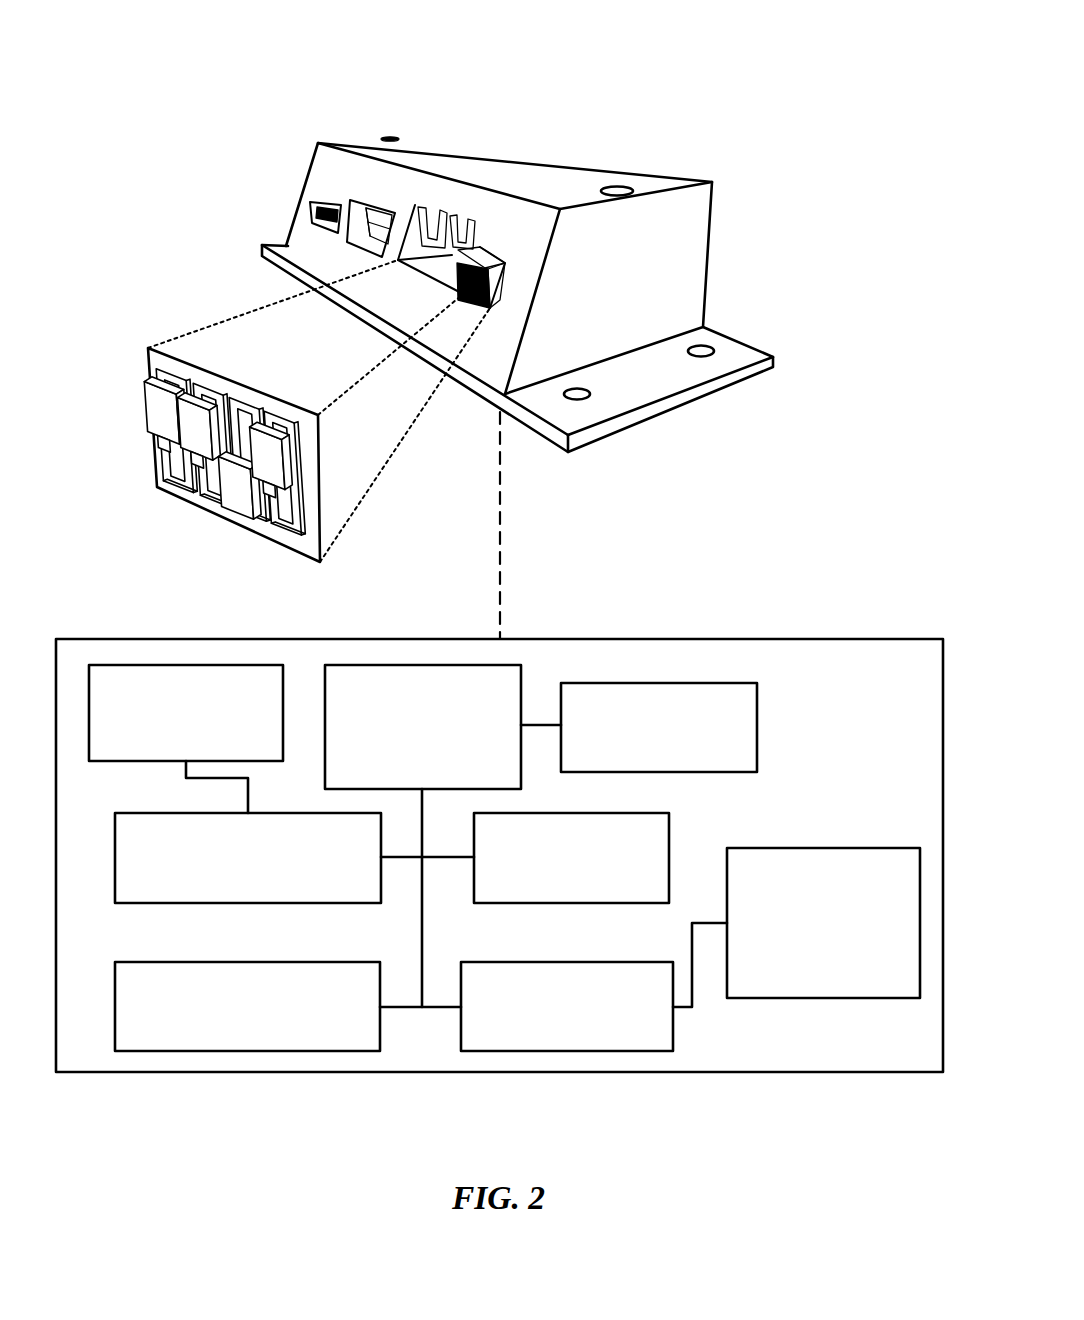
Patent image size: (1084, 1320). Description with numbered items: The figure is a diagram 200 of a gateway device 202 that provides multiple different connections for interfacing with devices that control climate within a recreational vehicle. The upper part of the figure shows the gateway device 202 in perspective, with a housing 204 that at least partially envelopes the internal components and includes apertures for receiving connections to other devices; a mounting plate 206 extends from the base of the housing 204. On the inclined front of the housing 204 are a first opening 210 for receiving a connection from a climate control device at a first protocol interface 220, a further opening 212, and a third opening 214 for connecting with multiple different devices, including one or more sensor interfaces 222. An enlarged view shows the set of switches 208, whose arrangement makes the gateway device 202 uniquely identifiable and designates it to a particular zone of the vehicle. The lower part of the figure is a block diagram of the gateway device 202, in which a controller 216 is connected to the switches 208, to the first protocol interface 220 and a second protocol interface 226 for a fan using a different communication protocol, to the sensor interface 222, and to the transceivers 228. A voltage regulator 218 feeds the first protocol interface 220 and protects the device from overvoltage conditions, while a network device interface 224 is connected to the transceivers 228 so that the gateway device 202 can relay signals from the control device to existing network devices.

The diagram 200 is at (205, 85).
The gateway device 202 is at (503, 176).
The housing 204 is at (552, 150).
The mounting plate 206 is at (595, 385).
The switches 208 is at (228, 377).
The first opening 210 is at (325, 202).
The port 212 is at (378, 242).
The third opening 214 is at (420, 200).
The controller 216 is at (405, 752).
The voltage regulator 218 is at (168, 752).
The first protocol interface 220 is at (230, 897).
The sensor interface 222 is at (554, 897).
The network device interface 224 is at (805, 977).
The second protocol interface 226 is at (230, 1046).
The transceivers 228 is at (549, 1032).